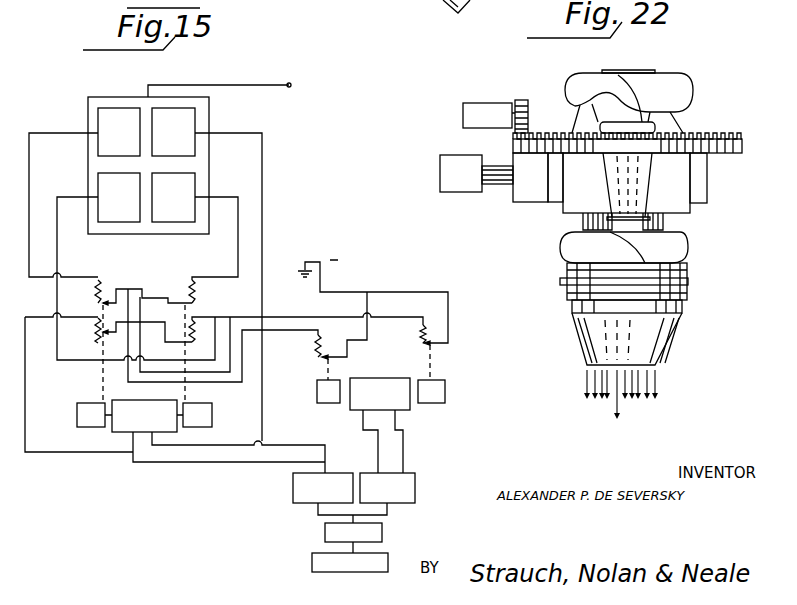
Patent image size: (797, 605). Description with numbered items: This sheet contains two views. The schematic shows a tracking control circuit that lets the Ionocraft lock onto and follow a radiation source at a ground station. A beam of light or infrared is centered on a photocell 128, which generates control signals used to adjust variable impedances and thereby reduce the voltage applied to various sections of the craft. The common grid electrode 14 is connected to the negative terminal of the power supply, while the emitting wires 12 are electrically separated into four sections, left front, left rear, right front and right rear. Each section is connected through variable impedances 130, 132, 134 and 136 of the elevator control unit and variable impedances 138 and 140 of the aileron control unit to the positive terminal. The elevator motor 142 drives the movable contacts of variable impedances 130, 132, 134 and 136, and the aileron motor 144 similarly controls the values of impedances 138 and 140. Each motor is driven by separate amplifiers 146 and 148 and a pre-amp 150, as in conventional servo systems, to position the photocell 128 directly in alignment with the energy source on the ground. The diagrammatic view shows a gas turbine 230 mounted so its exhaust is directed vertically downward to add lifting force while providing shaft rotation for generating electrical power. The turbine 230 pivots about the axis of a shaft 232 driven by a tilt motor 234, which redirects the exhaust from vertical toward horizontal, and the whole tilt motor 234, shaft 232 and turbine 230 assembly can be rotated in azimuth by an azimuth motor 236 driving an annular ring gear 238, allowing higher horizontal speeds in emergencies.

In FIG. 15, the emitting wires 12 is at (117, 96).
In FIG. 15, the common grid electrode 14 is at (108, 117).
In FIG. 15, the variable impedance 130 is at (83, 292).
In FIG. 15, the variable impedance 132 is at (83, 330).
In FIG. 15, the variable impedance 134 is at (196, 296).
In FIG. 15, the variable impedance 136 is at (209, 323).
In FIG. 15, the variable impedance 138 is at (316, 356).
In FIG. 15, the variable impedance 140 is at (422, 330).
In FIG. 15, the elevator motor 142 is at (127, 432).
In FIG. 15, the aileron motor 144 is at (403, 410).
In FIG. 15, the amplifier 146 is at (293, 480).
In FIG. 15, the amplifier 148 is at (415, 484).
In FIG. 15, the pre-amp 150 is at (383, 532).
In FIG. 15, the photocell 128 is at (384, 562).
In FIG. 22, the turbine 230 is at (693, 89).
In FIG. 22, the shaft 232 is at (497, 184).
In FIG. 22, the tilt motor 234 is at (443, 188).
In FIG. 22, the azimuth motor 236 is at (481, 103).
In FIG. 22, the annular ring gear 238 is at (716, 135).